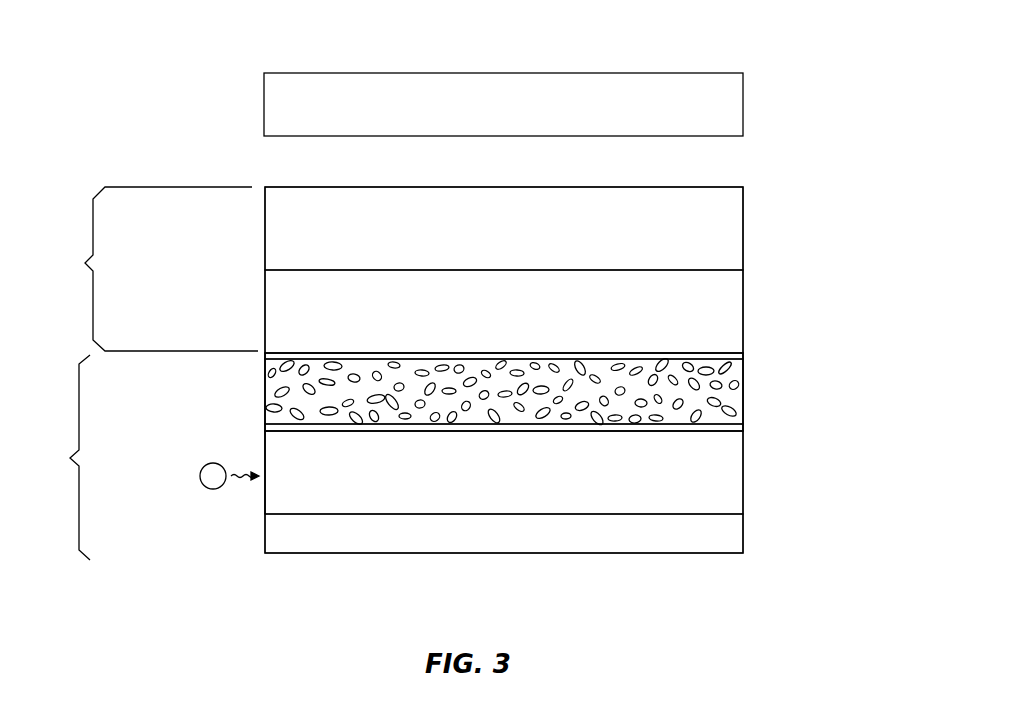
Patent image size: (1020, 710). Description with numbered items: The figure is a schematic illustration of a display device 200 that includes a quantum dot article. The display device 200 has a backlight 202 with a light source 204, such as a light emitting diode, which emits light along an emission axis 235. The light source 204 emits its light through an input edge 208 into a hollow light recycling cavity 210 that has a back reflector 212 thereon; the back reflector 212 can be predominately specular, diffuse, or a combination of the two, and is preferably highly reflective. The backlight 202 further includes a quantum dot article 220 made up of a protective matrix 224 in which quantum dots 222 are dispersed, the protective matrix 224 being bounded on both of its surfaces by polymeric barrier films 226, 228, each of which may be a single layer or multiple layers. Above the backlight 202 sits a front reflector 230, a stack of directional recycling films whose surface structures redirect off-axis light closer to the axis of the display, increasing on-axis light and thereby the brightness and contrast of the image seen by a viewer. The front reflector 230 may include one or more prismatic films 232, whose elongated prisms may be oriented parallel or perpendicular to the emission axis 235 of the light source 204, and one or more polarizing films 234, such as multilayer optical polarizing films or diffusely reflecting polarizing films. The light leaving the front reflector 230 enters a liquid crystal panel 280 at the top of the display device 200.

The display device 200 is at (206, 74).
The liquid crystal (LC) panel 280 is at (728, 107).
The front reflector 230 is at (141, 269).
The backlight 202 is at (51, 457).
The polarizing films 234 is at (729, 230).
The prismatic films 232 is at (729, 307).
The quantum dot article 220 is at (768, 362).
The polymeric barrier film 228 is at (290, 353).
The protective matrix 224 is at (275, 391).
The quantum dots 222 is at (713, 389).
The polymeric barrier film 226 is at (733, 428).
The input edge 208 is at (263, 450).
The hollow light recycling cavity 210 is at (728, 473).
The back reflector 212 is at (651, 540).
The light source 204 is at (209, 489).
The emission axis 235 is at (240, 482).